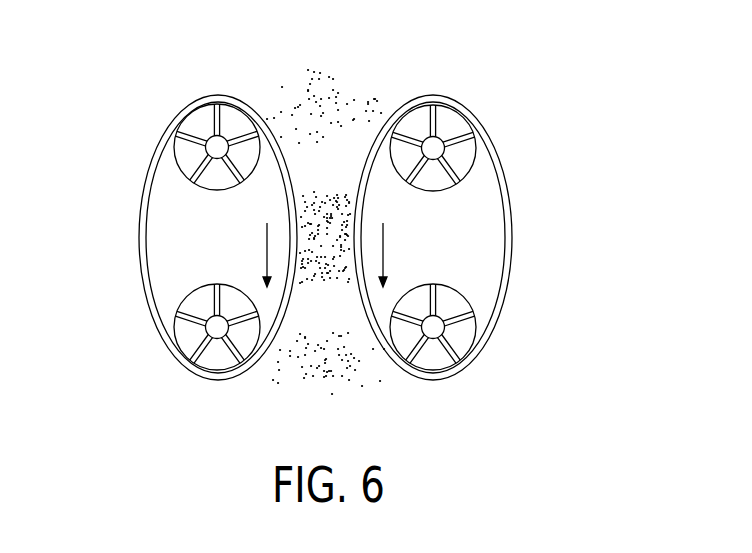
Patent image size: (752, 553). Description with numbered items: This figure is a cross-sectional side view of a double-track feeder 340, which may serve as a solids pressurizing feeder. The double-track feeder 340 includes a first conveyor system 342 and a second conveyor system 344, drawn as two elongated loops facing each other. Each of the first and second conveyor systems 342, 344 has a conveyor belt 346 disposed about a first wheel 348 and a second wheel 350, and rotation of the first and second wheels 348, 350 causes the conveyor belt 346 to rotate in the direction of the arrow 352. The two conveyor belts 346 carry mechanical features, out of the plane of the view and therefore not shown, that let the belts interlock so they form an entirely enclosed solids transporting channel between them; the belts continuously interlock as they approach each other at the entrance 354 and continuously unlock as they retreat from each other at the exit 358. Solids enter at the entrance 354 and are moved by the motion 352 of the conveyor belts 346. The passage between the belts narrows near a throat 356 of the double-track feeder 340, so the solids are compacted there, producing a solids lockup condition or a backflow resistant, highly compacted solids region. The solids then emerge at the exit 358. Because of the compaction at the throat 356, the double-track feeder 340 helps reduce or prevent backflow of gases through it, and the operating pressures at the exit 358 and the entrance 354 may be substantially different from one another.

The double-track feeder 340 is at (505, 50).
The first conveyor system 342 is at (152, 108).
The second conveyor system 344 is at (518, 108).
The conveyor belt 346 is at (140, 237).
The first wheel 348 is at (187, 316).
The second wheel 350 is at (181, 161).
The arrow 352 is at (267, 250).
The entrance 354 is at (313, 83).
The throat 356 is at (320, 272).
The exit 358 is at (345, 392).